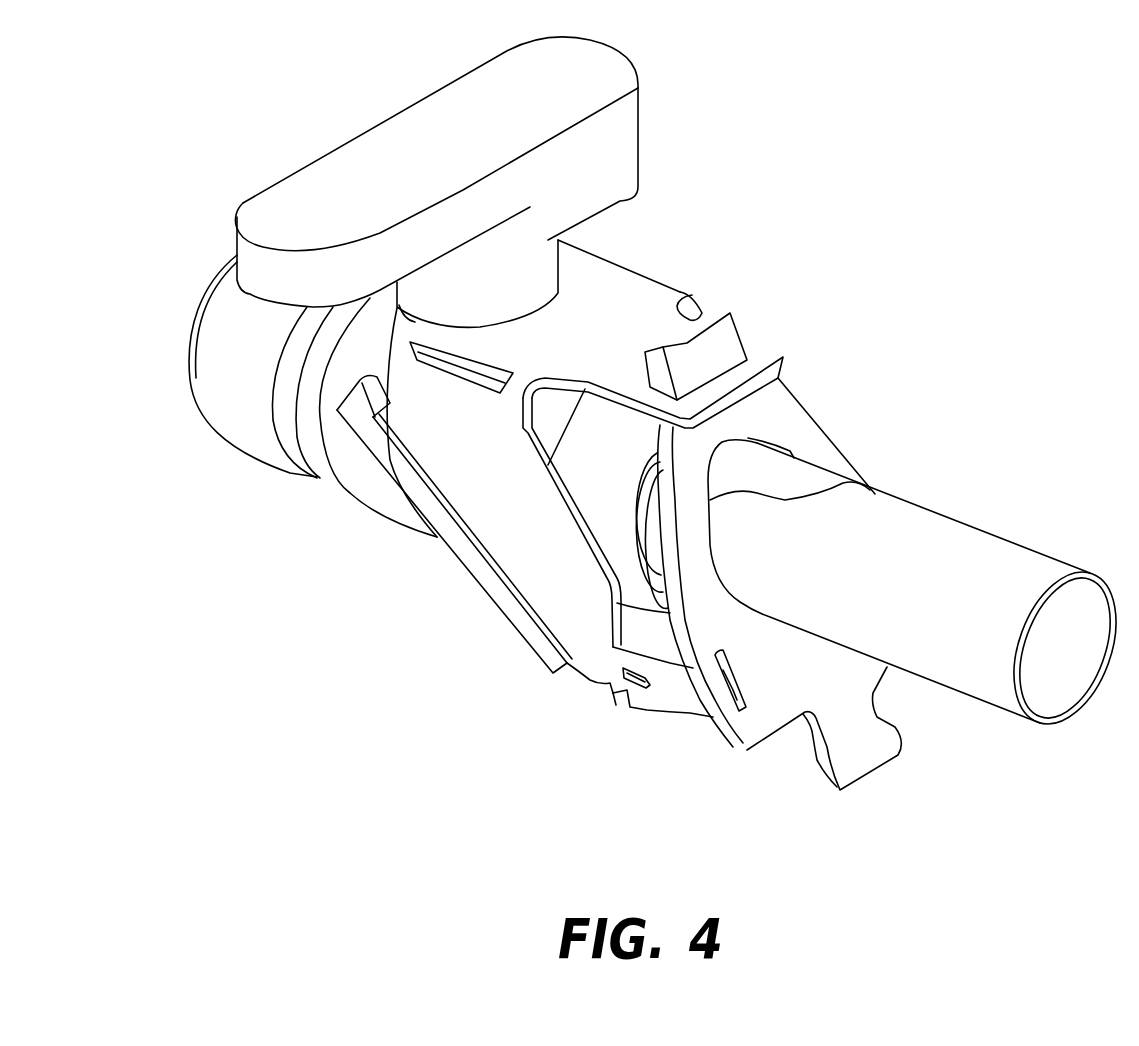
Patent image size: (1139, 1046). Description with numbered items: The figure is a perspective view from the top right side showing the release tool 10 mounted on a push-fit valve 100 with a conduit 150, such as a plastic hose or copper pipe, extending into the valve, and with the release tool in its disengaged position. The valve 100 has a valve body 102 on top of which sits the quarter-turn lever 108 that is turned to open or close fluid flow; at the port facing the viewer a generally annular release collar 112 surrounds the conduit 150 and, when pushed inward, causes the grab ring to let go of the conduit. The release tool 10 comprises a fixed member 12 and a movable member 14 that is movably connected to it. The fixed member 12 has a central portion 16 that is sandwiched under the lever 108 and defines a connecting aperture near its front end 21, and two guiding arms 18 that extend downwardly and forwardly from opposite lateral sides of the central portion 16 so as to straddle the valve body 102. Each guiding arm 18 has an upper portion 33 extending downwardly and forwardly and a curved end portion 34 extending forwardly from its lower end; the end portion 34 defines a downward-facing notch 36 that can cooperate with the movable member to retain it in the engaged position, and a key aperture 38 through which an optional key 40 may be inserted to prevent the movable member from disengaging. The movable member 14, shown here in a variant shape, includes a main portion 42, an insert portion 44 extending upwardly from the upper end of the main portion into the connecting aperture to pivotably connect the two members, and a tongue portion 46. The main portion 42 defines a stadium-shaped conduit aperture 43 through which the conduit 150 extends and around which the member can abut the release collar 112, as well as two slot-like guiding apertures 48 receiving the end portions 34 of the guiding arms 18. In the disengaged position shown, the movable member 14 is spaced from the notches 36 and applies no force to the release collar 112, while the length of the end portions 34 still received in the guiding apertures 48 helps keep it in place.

The release tool 10 is at (703, 280).
The fixed member 12 is at (593, 277).
The movable member 14 is at (862, 697).
The central portion 16 is at (610, 307).
The guiding arms 18 is at (580, 647).
The front end 21 is at (783, 360).
The upper portion 33 is at (453, 467).
The end portion 34 is at (688, 710).
The notch 36 is at (610, 690).
The key aperture 38 is at (643, 689).
The key 40 is at (480, 580).
The main portion 42 is at (797, 423).
The conduit aperture 43 is at (762, 447).
The insert portion 44 is at (722, 340).
The tongue portion 46 is at (870, 753).
The guiding apertures 48 is at (747, 743).
The push-fit valve 100 is at (305, 482).
The valve body 102 is at (365, 495).
The lever 108 is at (370, 160).
The release collar 112 is at (647, 530).
The conduit 150 is at (940, 557).